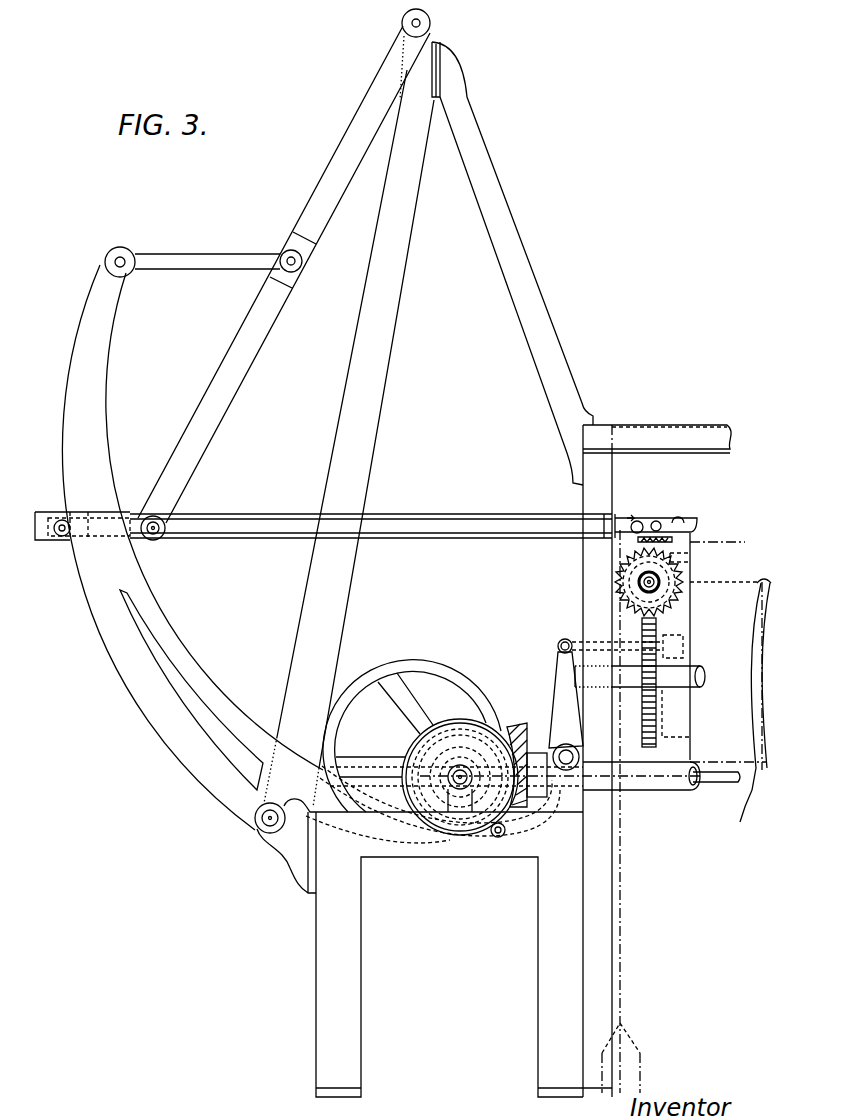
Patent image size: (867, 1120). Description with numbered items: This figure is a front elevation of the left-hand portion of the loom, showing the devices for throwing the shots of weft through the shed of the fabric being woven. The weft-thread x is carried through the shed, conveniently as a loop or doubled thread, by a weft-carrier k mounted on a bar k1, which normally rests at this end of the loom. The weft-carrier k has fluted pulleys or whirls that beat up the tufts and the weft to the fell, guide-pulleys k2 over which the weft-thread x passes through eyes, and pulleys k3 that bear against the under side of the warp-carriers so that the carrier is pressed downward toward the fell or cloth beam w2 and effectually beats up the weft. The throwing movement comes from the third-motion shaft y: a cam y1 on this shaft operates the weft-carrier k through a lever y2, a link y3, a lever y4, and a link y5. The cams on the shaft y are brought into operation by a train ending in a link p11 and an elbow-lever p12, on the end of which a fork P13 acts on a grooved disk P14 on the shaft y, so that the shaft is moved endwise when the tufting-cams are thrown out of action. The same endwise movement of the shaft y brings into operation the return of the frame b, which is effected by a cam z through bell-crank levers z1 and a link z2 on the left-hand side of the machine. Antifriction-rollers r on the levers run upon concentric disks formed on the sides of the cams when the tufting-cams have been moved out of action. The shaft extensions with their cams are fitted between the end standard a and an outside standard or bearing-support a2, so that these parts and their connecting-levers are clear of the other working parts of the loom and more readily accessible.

The lever y4 is at (249, 352).
The link y3 is at (176, 258).
The lever y2 is at (130, 686).
The link y5 is at (134, 512).
The bar k1 is at (442, 520).
The weft-carrier k is at (666, 518).
The guide-pulleys k2 is at (660, 520).
The pulleys k3 is at (641, 519).
The weft-thread x is at (636, 988).
The end standard a is at (597, 761).
The outside standards a2 is at (449, 954).
The cam y1 is at (358, 690).
The fork P13 is at (465, 748).
The grooved disk P14 is at (432, 764).
The third-motion shaft y is at (466, 767).
The cam z is at (440, 840).
The antifriction-rollers r is at (497, 840).
The bell-crank levers z1 is at (548, 798).
The link z2 is at (583, 646).
The elbow-lever p12 is at (540, 798).
The frame b is at (692, 722).
The shaft p is at (658, 786).
The link p11 is at (716, 782).
The fell or cloth beam w2 is at (754, 709).